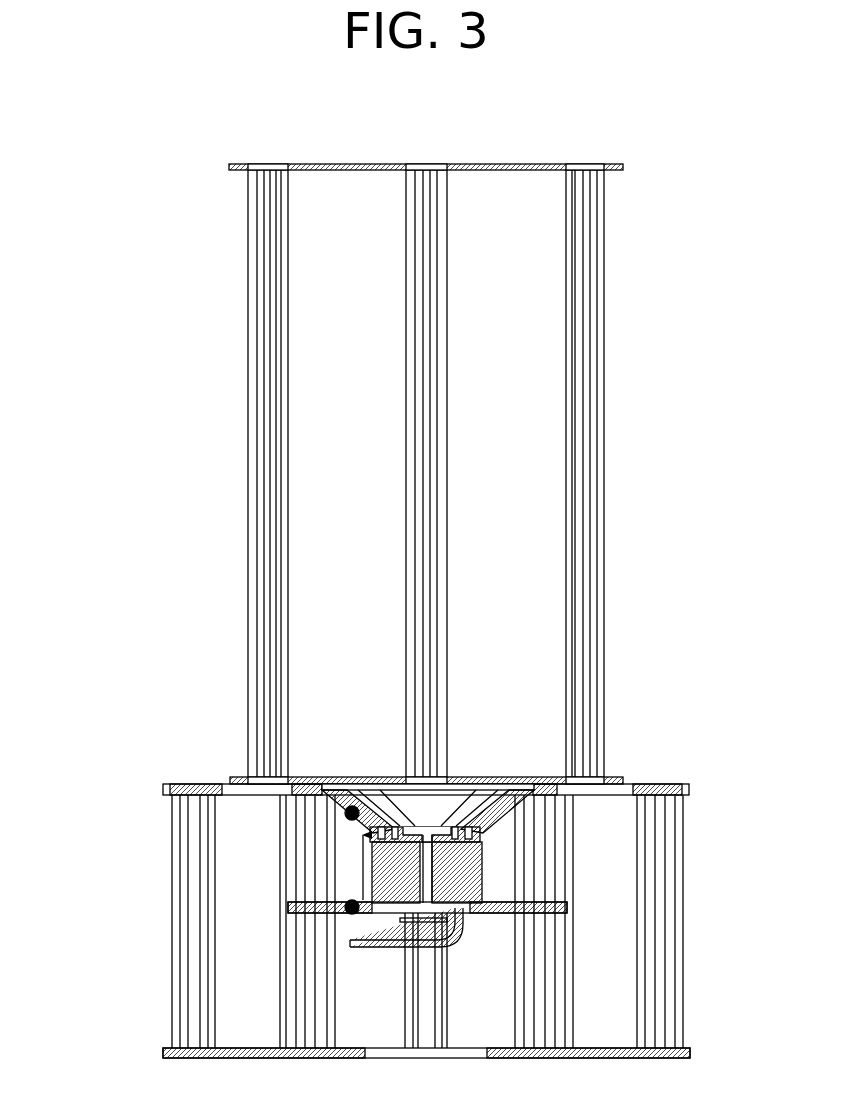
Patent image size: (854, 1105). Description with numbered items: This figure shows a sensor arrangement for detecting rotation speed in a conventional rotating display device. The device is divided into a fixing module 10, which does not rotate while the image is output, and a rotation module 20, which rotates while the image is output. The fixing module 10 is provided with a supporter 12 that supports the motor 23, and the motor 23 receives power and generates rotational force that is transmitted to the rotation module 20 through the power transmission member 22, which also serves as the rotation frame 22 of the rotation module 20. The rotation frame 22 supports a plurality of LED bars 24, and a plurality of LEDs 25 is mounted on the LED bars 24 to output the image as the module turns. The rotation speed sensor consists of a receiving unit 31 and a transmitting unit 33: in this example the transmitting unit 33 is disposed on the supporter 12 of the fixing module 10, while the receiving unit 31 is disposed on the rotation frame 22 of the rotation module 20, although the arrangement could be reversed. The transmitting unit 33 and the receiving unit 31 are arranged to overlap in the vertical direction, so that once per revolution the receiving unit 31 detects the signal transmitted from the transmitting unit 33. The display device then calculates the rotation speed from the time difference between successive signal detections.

The fixing module 10 is at (94, 833).
The supporter 12 is at (528, 907).
The rotation module 20 is at (94, 163).
The rotation frame 22 is at (520, 815).
The motor 23 is at (483, 866).
The LED bar 24 is at (248, 213).
The LED 25 is at (428, 440).
The receiving unit 31 is at (345, 815).
The transmitting unit 33 is at (348, 902).